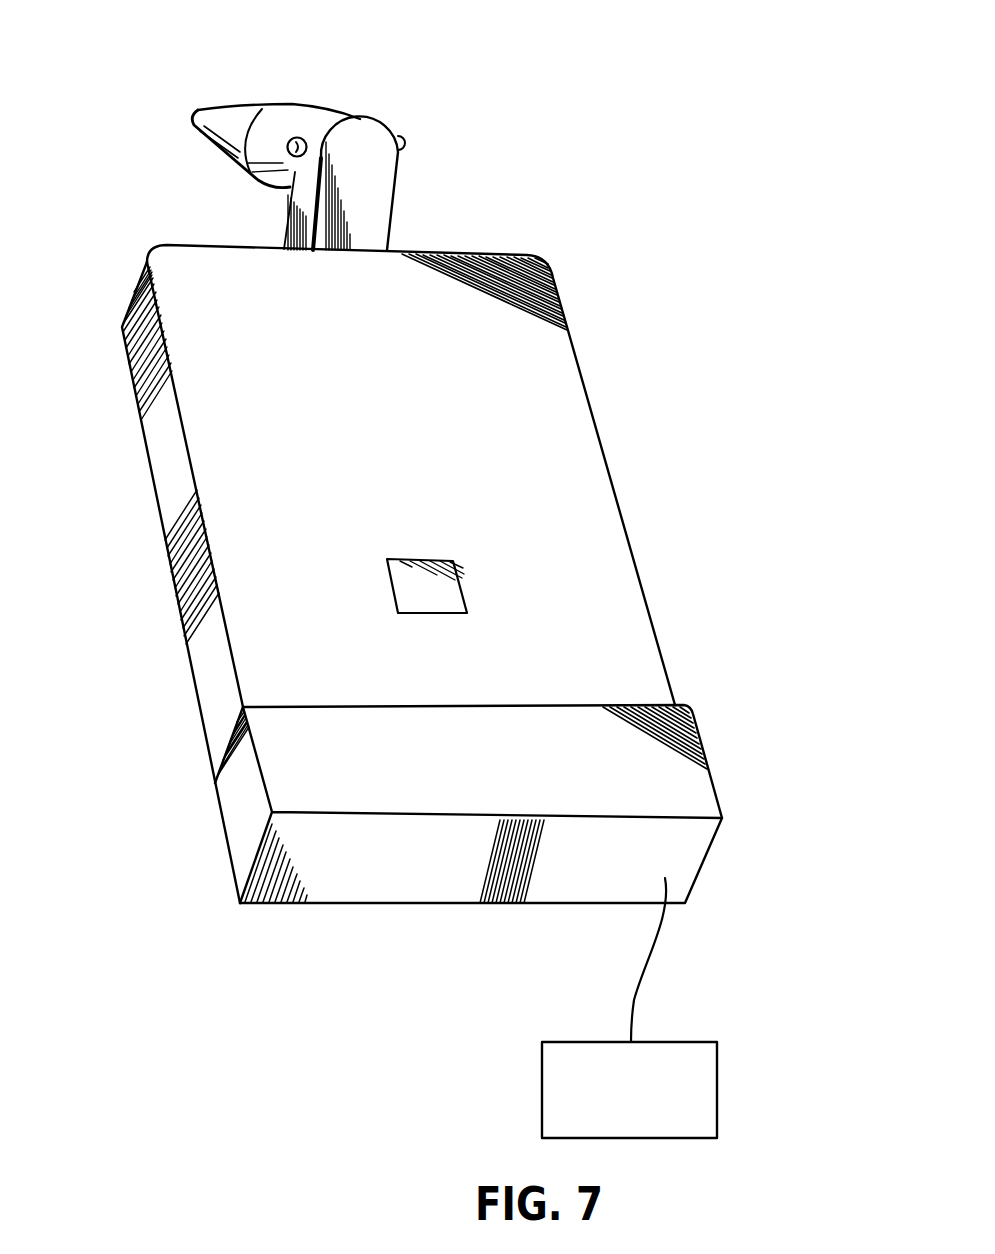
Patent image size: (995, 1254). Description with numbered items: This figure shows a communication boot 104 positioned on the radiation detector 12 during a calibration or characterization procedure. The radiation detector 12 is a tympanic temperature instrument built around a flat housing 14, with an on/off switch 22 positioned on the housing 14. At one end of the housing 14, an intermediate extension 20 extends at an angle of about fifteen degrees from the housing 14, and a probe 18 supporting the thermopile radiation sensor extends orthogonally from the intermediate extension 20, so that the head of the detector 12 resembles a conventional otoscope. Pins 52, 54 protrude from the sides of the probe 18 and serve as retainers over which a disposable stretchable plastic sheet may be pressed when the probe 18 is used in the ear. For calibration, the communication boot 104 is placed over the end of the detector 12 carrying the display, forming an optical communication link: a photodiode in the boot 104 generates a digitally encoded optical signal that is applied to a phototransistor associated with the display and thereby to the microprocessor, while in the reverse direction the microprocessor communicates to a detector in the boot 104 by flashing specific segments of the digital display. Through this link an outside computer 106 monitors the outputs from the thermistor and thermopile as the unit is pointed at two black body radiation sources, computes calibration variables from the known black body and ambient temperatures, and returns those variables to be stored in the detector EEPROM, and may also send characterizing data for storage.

The radiation detector 12 is at (386, 506).
The flat housing 14 is at (204, 727).
The probe 18 is at (331, 119).
The intermediate extension 20 is at (392, 218).
The on/off switch 22 is at (457, 587).
The pin 52 is at (294, 137).
The pin 54 is at (405, 141).
The communication boot 104 is at (400, 890).
The outside computer 106 is at (717, 1072).